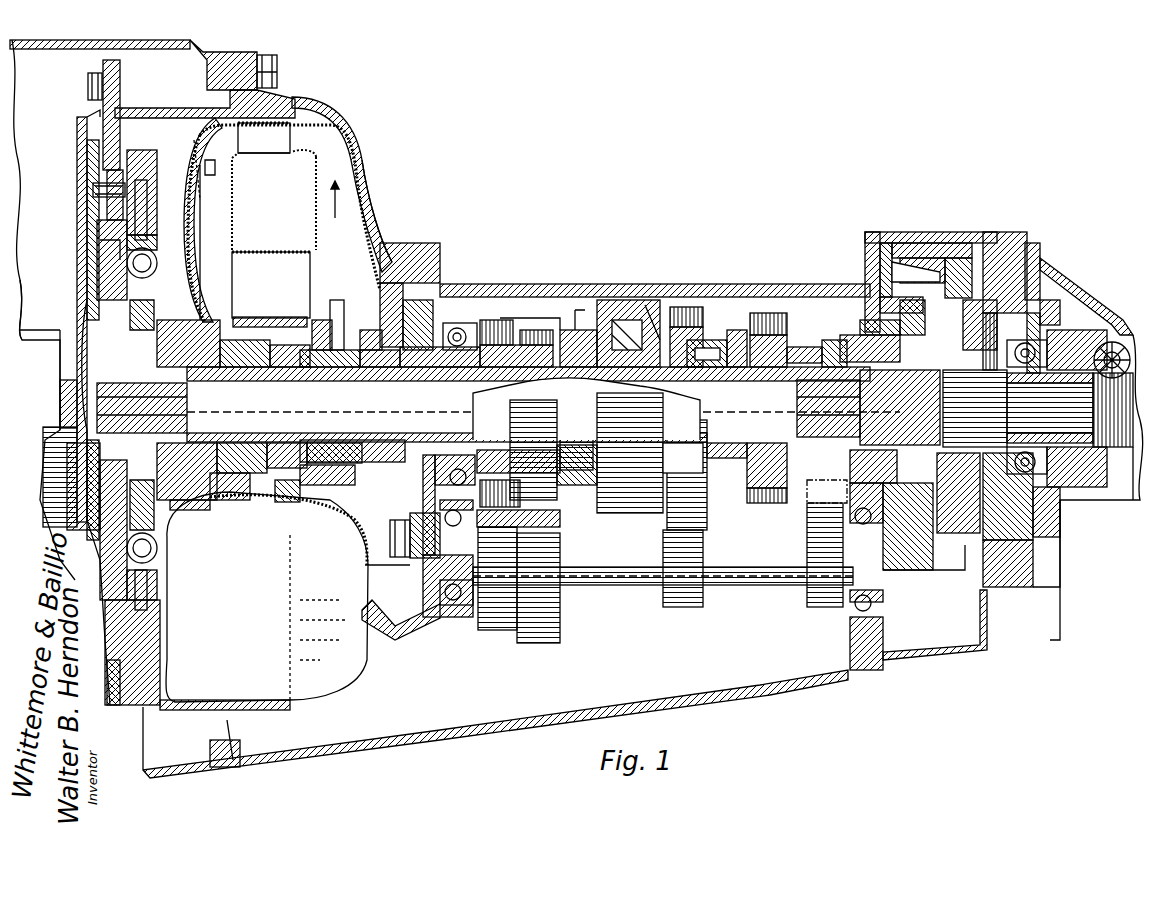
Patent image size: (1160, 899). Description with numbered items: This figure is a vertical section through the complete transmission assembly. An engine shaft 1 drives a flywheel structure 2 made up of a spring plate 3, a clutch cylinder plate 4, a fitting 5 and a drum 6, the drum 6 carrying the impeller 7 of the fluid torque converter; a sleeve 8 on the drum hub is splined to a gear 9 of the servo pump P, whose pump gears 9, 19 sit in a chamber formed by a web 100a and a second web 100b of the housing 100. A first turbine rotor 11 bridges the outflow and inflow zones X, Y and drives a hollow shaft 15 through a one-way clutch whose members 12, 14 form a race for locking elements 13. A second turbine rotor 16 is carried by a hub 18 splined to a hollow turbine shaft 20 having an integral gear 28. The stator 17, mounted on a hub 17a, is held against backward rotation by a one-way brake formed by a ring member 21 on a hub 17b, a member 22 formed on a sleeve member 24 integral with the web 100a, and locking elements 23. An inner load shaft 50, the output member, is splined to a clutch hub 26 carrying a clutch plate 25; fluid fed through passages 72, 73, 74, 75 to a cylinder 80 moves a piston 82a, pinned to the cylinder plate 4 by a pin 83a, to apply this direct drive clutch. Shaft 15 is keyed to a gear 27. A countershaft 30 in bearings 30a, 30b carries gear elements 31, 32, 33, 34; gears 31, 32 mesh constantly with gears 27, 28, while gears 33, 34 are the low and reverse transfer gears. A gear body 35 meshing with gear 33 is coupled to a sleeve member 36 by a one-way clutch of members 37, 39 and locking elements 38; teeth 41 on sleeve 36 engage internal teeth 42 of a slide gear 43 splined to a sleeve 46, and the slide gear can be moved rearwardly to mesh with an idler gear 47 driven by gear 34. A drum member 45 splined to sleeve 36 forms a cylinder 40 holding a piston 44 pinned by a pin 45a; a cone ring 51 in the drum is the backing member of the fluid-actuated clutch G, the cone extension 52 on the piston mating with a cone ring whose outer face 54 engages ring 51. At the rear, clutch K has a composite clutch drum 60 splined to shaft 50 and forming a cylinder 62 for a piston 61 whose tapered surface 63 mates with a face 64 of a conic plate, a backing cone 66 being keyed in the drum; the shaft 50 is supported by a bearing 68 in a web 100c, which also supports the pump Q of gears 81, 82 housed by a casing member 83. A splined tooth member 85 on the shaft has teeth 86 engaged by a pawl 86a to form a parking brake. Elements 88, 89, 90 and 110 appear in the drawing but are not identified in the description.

The engine shaft 1 is at (13, 335).
The flywheel structure 2 is at (77, 121).
The spring plate 3 is at (77, 168).
The clutch cylinder plate 4 is at (88, 227).
The fitting 5 is at (135, 118).
The drum 6 is at (176, 108).
The impeller 7 is at (352, 147).
The sleeve 8 is at (372, 381).
The gear 9 is at (204, 160).
The first driven turbine rotor member 11 is at (186, 156).
The one-way clutch member 12 is at (200, 505).
The locking elements 13 is at (226, 505).
The one-way clutch member 14 is at (205, 440).
The hollow shaft 15 is at (266, 381).
The second turbine rotor element 16 is at (182, 205).
The stator 17 is at (250, 252).
The stator hub 17a is at (268, 262).
The hub 17b is at (276, 317).
The hub 18 is at (235, 381).
The pump gear 19 is at (465, 320).
The hollow turbine shaft 20 is at (300, 381).
The ring member 21 is at (318, 318).
The brake member 22 is at (306, 505).
The locking elements 23 is at (290, 505).
The sleeve member 24 is at (340, 381).
The clutch plate 25 is at (130, 234).
The clutch hub 26 is at (201, 370).
The gear 27 is at (535, 325).
The gear 28 is at (505, 318).
The countershaft 30 is at (620, 586).
The bearing 30a is at (455, 620).
The bearing 30b is at (880, 605).
The gear element 31 is at (560, 630).
The gear element 32 is at (497, 636).
The low transfer gear 33 is at (680, 612).
The reverse transfer gear 34 is at (810, 606).
The gear body 35 is at (680, 307).
The sleeve member 36 is at (741, 386).
The one-way clutch member 37 is at (715, 337).
The locking elements 38 is at (700, 386).
The one-way clutch member 39 is at (680, 381).
The cylinder portion 40 is at (598, 326).
The teeth 41 is at (775, 352).
The internal teeth 42 is at (742, 345).
The slide gear 43 is at (770, 313).
The piston 44 is at (611, 300).
The drum member 45 is at (597, 487).
The pin 45a is at (572, 323).
The sleeve 46 is at (825, 363).
The idler gear 47 is at (822, 480).
The inner load shaft 50 is at (392, 526).
The cone ring 51 is at (626, 320).
The projecting extension 52 is at (640, 400).
The outer face 54 is at (648, 300).
The composite clutch drum 60 is at (938, 250).
The piston 61 is at (960, 250).
The cylinder 62 is at (1020, 246).
The tapered surface 63 is at (880, 302).
The face 64 is at (890, 270).
The backing cone 66 is at (880, 248).
The bearing 68 is at (1035, 356).
The passage 72 is at (845, 341).
The passage 73 is at (930, 402).
The passage 74 is at (100, 406).
The passage 75 is at (45, 420).
The cylinder 80 is at (98, 270).
The pump gear 81 is at (1045, 306).
The pump gear 82 is at (940, 506).
The piston 82a is at (100, 254).
The casing member 83 is at (963, 579).
The pin 83a is at (95, 194).
The splined tooth member 85 is at (1085, 532).
The teeth 86 is at (1080, 540).
The pawl 86a is at (1080, 305).
The nut 88 is at (1116, 355).
The threaded end 89 is at (1100, 330).
The flange 90 is at (1100, 470).
The housing 100 is at (382, 167).
The housing web portion 100a is at (442, 263).
The second web 100b is at (395, 243).
The web member 100c is at (1000, 232).
The housing wall 110 is at (284, 100).
The servo pump P is at (413, 262).
The converter oil outflow zone X is at (335, 198).
The converter oil inflow zone Y is at (276, 72).
The clutch G is at (631, 514).
The rear clutch unit K is at (915, 243).
The pump Q is at (1030, 512).